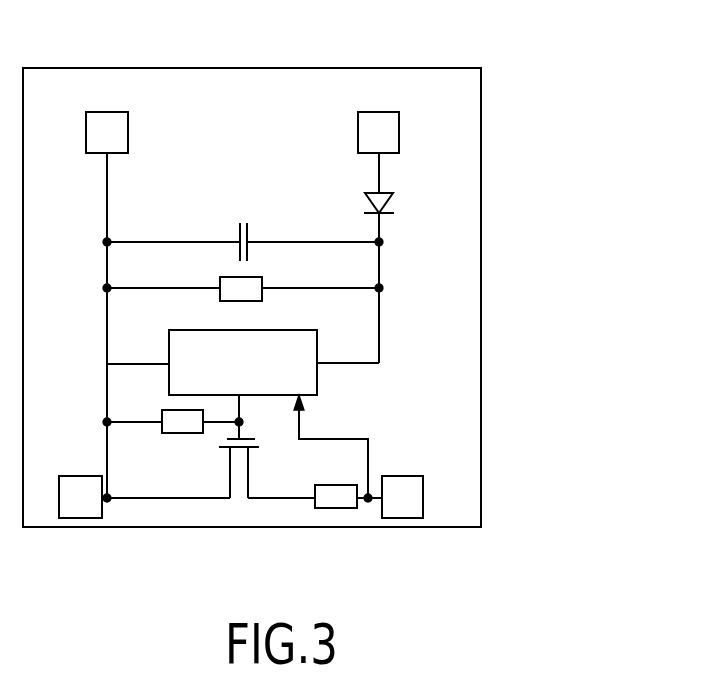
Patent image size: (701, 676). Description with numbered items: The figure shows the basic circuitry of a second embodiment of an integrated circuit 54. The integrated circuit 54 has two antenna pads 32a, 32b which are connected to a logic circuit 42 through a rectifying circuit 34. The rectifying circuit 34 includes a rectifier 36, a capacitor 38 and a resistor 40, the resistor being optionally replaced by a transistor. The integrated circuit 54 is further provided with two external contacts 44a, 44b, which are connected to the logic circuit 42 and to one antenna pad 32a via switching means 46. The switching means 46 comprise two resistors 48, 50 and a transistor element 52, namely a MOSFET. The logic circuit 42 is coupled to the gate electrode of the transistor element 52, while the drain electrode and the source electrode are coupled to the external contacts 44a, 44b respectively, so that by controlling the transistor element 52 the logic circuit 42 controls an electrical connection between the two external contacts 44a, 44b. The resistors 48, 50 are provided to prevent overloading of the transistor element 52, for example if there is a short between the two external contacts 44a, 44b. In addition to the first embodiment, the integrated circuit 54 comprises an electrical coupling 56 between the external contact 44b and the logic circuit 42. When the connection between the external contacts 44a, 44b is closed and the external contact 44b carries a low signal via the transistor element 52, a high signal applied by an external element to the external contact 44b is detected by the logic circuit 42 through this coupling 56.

The antenna pad 32a is at (112, 125).
The antenna pad 32b is at (381, 125).
The rectifying circuit 34 is at (96, 260).
The rectifier 36 is at (397, 204).
The capacitor 38 is at (248, 218).
The resistor 40 is at (262, 296).
The logic circuit 42 is at (168, 343).
The external contact 44a is at (82, 500).
The external contact 44b is at (392, 500).
The switching means 46 is at (91, 430).
The resistor 48 is at (183, 434).
The resistor 50 is at (338, 500).
The transistor element 52 is at (262, 440).
The integrated circuit 54 is at (481, 88).
The electrical coupling 56 is at (369, 452).